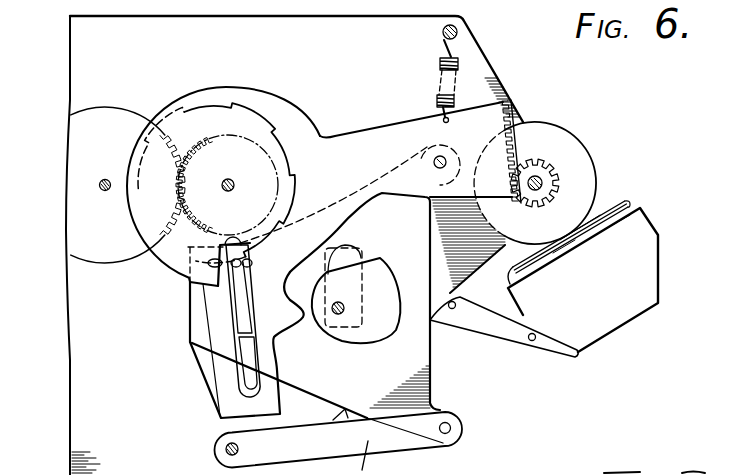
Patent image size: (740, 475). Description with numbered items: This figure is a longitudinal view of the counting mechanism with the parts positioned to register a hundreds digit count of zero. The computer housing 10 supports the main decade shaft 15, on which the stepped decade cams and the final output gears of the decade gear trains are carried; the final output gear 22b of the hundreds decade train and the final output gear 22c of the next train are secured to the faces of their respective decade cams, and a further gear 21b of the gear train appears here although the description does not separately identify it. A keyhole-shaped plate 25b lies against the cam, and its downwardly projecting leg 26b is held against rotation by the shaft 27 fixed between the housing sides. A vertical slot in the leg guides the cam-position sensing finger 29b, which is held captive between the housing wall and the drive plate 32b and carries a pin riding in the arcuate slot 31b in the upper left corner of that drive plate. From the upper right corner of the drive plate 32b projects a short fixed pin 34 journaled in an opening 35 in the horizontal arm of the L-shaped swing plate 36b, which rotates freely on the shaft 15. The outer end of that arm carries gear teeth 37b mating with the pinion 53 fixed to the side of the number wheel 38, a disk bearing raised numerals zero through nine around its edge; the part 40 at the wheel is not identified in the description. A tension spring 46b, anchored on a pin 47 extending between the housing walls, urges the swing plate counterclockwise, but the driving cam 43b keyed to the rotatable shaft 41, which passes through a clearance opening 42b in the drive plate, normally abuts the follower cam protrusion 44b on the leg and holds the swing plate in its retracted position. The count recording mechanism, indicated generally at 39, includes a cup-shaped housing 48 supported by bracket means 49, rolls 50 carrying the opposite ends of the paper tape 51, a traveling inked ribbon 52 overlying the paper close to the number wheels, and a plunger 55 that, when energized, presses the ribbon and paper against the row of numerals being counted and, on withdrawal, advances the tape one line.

The computer housing 10 is at (82, 427).
The main decade shaft 15 is at (221, 185).
The driving gear 21b is at (108, 107).
The final output gear 22b is at (212, 135).
The final output gear 22c is at (193, 157).
The keyhole-shaped plate 25b is at (241, 104).
The leg 26b is at (228, 401).
The shaft 27 is at (226, 450).
The cam-position sensing finger 29b is at (238, 301).
The arcuate slot 31b is at (192, 287).
The drive plate 32b is at (426, 369).
The fixed pin 34 is at (445, 158).
The opening 35 is at (437, 167).
The swing plate 36b is at (358, 138).
The gear teeth 37b is at (506, 116).
The number wheel 38 is at (584, 136).
The count recording mechanism 39 is at (628, 201).
The pinion 40 is at (556, 174).
The rotatable shaft 41 is at (344, 308).
The clearance opening 42b is at (350, 246).
The driving cam 43b is at (365, 344).
The follower cam protrusion 44b is at (296, 330).
The tension spring 46b is at (458, 63).
The pin 47 is at (458, 33).
The cup-shaped housing 48 is at (645, 286).
The bracket means 49 is at (514, 330).
The rolls 50 is at (526, 273).
The paper tape 51 is at (597, 234).
The inked ribbon 52 is at (598, 246).
The pinion 53 is at (542, 184).
The plunger 55 is at (553, 253).